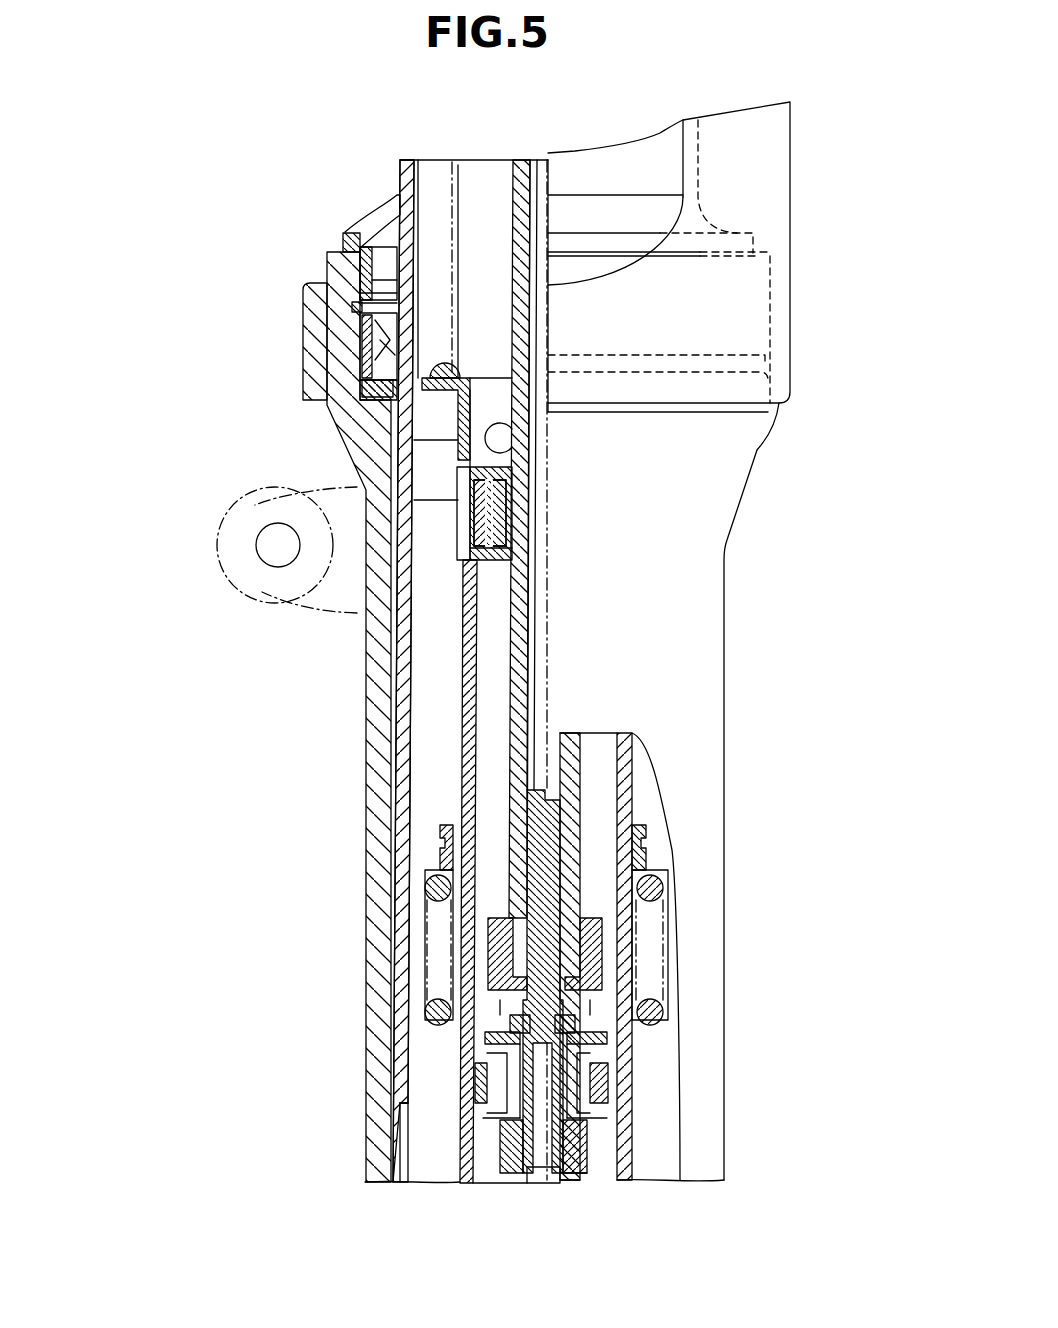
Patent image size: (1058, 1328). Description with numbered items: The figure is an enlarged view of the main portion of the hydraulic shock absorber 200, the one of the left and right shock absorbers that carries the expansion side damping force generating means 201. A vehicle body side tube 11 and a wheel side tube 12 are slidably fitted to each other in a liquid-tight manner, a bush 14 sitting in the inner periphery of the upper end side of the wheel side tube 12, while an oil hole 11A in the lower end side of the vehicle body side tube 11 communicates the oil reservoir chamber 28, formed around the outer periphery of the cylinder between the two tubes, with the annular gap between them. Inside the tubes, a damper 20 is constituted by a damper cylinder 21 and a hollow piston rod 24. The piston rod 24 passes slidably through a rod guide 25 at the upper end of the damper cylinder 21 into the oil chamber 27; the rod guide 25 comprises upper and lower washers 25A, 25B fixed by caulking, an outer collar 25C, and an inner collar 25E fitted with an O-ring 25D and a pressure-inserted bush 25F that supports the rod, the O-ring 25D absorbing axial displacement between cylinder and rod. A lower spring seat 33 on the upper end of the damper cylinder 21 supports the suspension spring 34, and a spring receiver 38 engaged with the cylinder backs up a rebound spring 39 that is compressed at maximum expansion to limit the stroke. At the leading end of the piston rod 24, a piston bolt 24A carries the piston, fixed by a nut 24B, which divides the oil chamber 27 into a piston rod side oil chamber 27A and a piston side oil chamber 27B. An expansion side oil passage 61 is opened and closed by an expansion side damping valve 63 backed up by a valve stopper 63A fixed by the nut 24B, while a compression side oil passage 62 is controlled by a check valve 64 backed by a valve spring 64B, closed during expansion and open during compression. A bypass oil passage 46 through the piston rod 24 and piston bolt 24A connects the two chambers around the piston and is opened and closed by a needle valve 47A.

The hydraulic shock absorber 200 is at (262, 212).
The vehicle body side tube 11 is at (400, 182).
The wheel side tube 12 is at (372, 740).
The oil hole 11A is at (400, 1124).
The bush 14 is at (435, 483).
The damper 20 is at (437, 452).
The damper cylinder 21 is at (460, 672).
The piston rod 24 is at (516, 195).
The piston bolt 24A is at (593, 946).
The nut 24B is at (573, 1175).
The rod guide 25 is at (467, 534).
The upper washer 25A is at (512, 462).
The lower washer 25B is at (490, 557).
The outer collar 25C is at (463, 510).
The O-ring 25D is at (465, 515).
The inner collar 25E is at (505, 495).
The bush 25F is at (512, 522).
The oil chamber 27 is at (495, 632).
The piston rod side oil chamber 27A is at (495, 672).
The piston side oil chamber 27B is at (492, 1182).
The oil reservoir chamber 28 is at (457, 498).
The lower spring seat 33 is at (505, 370).
The suspension spring 34 is at (445, 365).
The spring receiver 38 is at (453, 855).
The rebound spring 39 is at (427, 1015).
The bypass oil passage 46 is at (593, 1000).
The needle valve 47A is at (556, 856).
The expansion side oil passage 61 is at (613, 1082).
The compression side oil passage 62 is at (478, 1087).
The expansion side damping valve 63 is at (593, 1127).
The valve stopper 63A is at (575, 1133).
The check valve 64 is at (608, 1044).
The valve spring 64B is at (607, 1033).
The expansion side damping force generating means 201 is at (480, 1134).